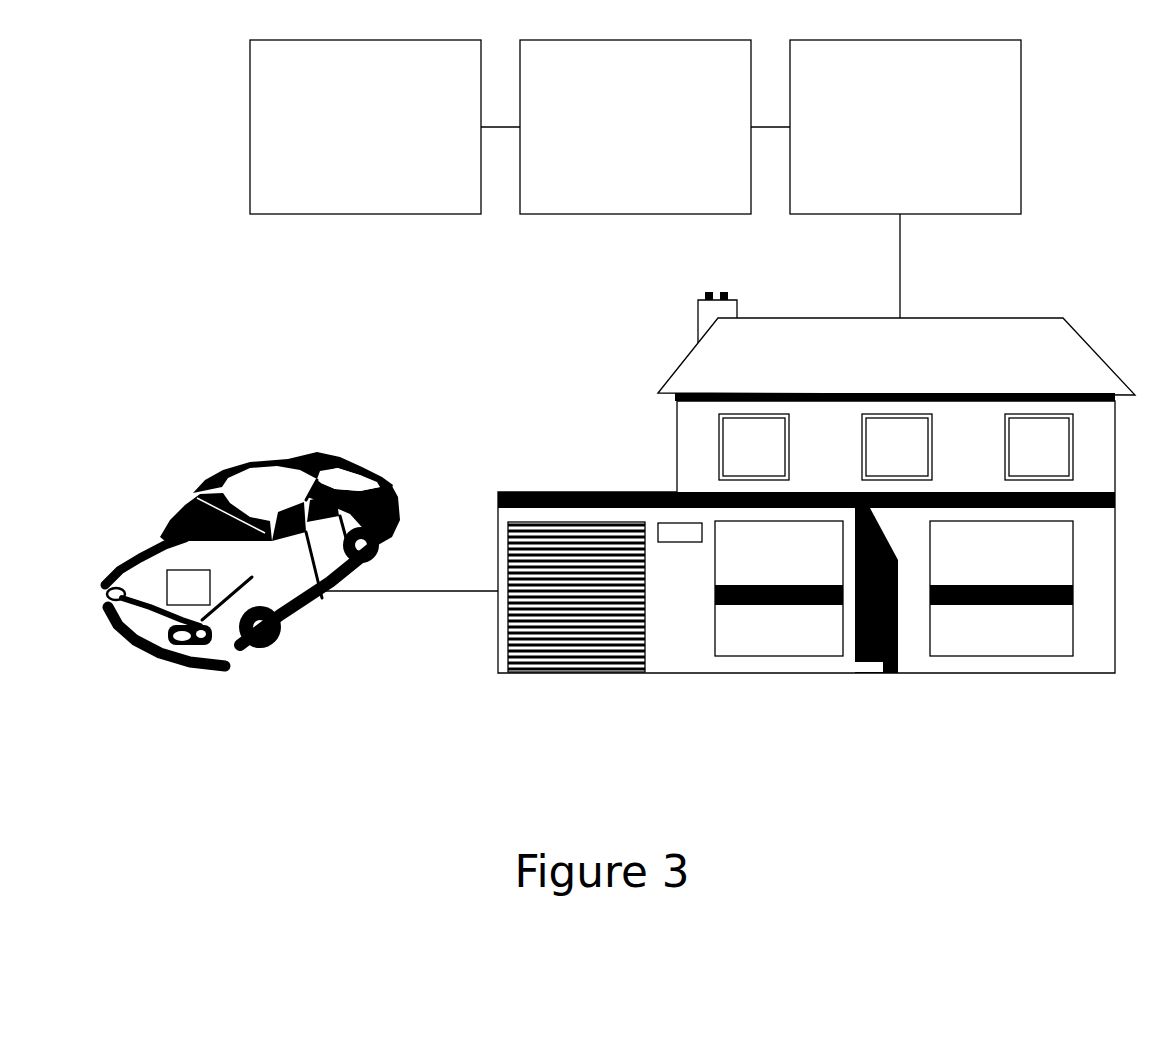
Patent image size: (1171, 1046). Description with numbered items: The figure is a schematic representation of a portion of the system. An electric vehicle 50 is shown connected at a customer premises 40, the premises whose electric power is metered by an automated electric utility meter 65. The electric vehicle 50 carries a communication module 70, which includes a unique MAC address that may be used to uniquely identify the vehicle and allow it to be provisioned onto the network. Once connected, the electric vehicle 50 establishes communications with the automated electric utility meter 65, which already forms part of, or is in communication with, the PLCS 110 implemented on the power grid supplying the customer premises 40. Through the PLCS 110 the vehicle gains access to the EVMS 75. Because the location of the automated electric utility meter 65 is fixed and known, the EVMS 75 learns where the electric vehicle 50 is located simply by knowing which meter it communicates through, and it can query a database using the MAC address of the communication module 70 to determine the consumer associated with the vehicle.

The EVMS 75 is at (365, 127).
The PLCS 110 is at (635, 127).
The automated electric utility meter 65 is at (905, 127).
The electric vehicle 50 is at (248, 463).
The communication module 70 is at (188, 587).
The customer premises 40 is at (957, 673).